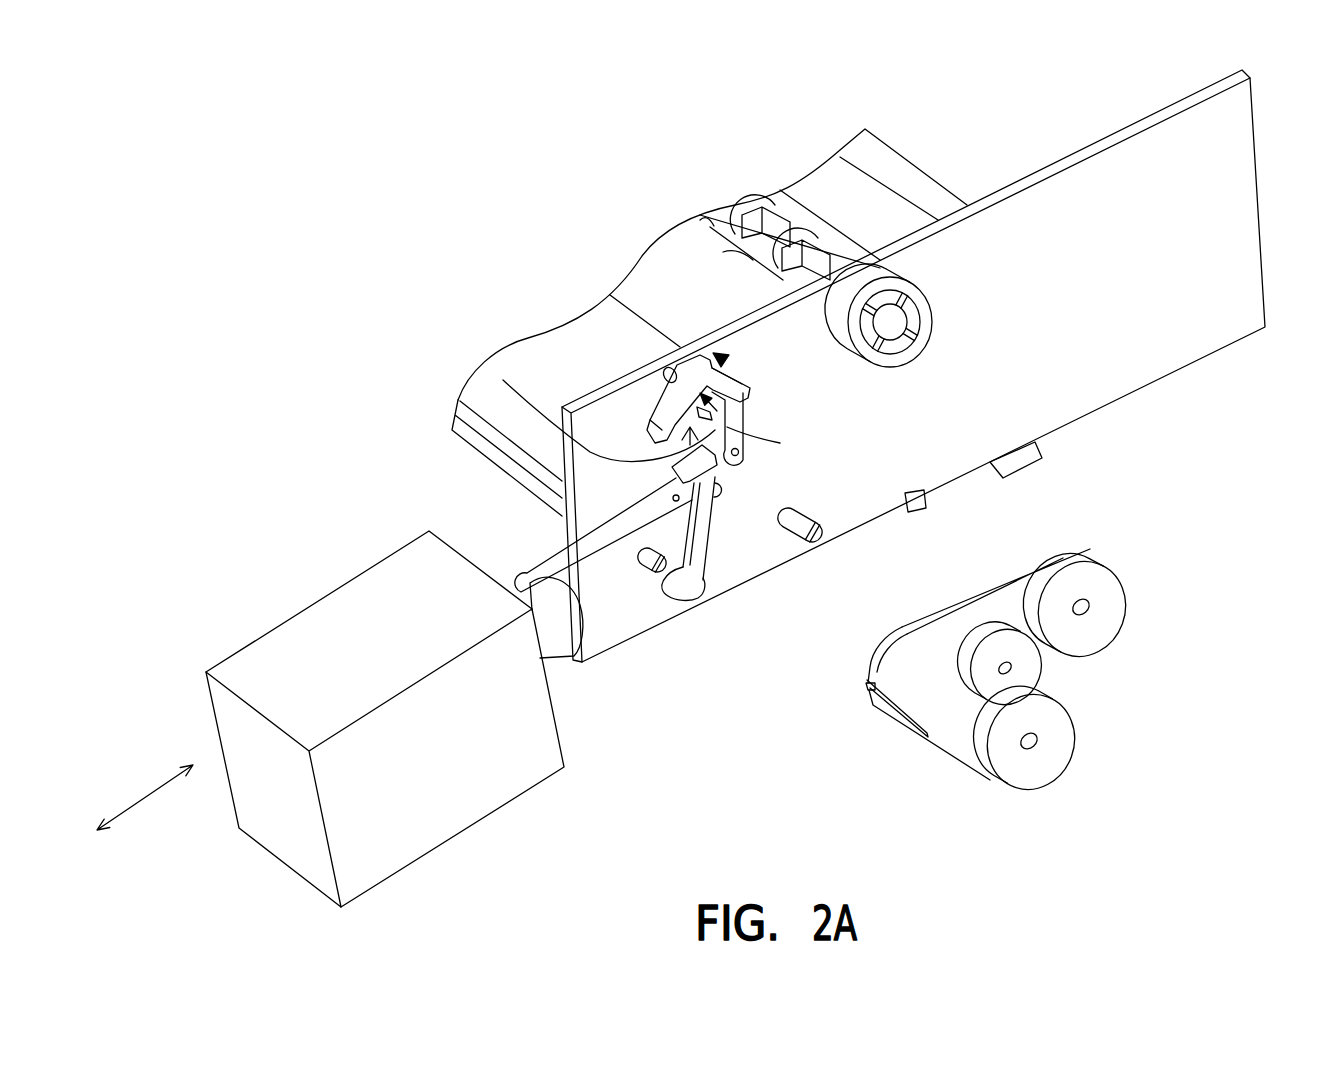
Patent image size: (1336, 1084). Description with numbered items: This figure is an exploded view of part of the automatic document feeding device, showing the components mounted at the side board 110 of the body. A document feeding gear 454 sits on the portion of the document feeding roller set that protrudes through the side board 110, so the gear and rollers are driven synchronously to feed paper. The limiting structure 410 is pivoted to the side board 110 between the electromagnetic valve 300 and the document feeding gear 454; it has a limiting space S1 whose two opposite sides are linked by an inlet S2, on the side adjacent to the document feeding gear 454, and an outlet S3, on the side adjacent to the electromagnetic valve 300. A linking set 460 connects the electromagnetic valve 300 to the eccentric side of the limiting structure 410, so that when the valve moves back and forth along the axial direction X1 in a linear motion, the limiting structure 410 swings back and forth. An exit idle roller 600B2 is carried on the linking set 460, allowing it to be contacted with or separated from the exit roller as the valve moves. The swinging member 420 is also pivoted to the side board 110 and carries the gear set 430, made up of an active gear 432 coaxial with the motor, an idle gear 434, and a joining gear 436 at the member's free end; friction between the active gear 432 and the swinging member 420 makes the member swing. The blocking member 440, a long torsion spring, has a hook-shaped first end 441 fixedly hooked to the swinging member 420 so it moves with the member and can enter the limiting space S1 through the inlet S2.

The side board 110 is at (1226, 240).
The document feeding gear 454 is at (884, 274).
The limiting structure 410 is at (667, 403).
The limiting space S1 is at (748, 428).
The inlet S2 is at (721, 366).
The outlet S3 is at (503, 380).
The exit idle roller 600B2 is at (687, 587).
The linking set 460 is at (598, 550).
The electromagnetic valve 300 is at (468, 803).
The swinging member 420 is at (950, 732).
The blocking member 440 is at (866, 684).
The first end 441 is at (893, 723).
The gear set 430 is at (1208, 640).
The active gear 432 is at (1052, 743).
The idle gear 434 is at (1023, 665).
The joining gear 436 is at (1094, 622).
The axial direction X1 is at (145, 800).